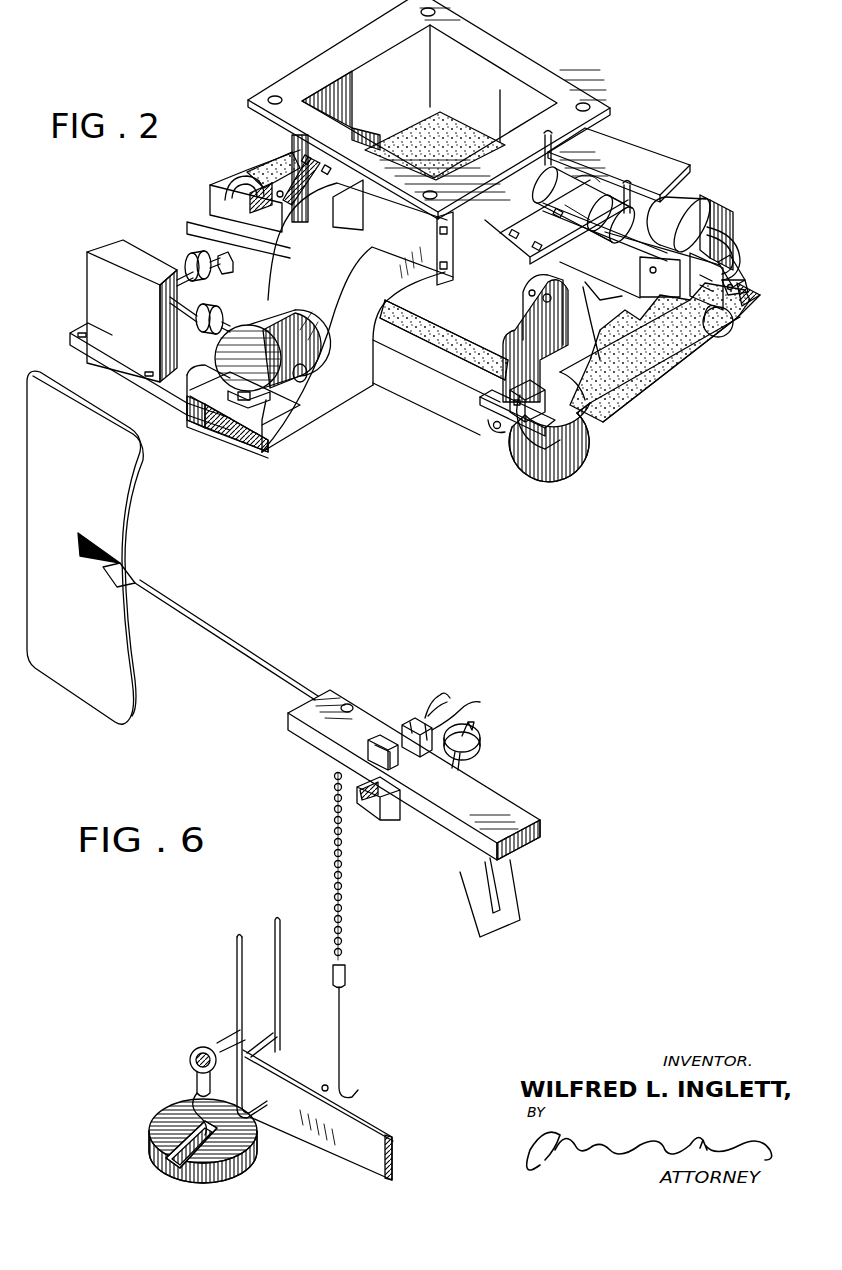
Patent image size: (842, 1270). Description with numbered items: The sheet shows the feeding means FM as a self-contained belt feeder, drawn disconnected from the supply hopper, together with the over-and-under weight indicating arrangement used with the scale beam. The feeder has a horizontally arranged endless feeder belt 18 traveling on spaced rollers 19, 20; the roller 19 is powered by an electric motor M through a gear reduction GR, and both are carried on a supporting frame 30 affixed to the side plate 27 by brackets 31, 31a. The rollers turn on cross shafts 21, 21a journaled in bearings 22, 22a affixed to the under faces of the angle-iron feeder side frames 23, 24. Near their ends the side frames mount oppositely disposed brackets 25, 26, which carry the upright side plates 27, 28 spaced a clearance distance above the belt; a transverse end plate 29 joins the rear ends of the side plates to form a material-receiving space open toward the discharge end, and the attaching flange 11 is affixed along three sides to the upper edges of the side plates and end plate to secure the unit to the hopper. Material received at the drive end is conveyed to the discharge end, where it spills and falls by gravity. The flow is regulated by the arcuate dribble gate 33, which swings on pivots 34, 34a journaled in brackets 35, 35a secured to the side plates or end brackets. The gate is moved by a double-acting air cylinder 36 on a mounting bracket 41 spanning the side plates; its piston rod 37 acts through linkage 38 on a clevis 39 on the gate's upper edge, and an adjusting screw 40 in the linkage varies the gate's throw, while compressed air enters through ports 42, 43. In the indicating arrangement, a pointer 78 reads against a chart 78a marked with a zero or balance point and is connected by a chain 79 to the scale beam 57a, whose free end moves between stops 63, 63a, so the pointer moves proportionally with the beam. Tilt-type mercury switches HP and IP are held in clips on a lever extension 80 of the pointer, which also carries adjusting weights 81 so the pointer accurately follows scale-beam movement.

In FIG. 2, the attaching flange 11 is at (507, 58).
In FIG. 2, the transverse end plate 29 is at (345, 90).
In FIG. 2, the bracket 25 is at (308, 187).
In FIG. 2, the roller 19 is at (238, 193).
In FIG. 2, the gear reduction GR is at (98, 293).
In FIG. 2, the bearing 22 is at (220, 250).
In FIG. 2, the cross shaft 21 is at (210, 273).
In FIG. 2, the electric motor M is at (238, 403).
In FIG. 2, the supporting frame 30 is at (207, 400).
In FIG. 2, the bracket 31 is at (309, 259).
In FIG. 2, the bracket 31a is at (344, 310).
In FIG. 2, the feeder side frame 23 is at (433, 360).
In FIG. 2, the upright side plate 27 is at (503, 284).
In FIG. 2, the bracket 35 is at (547, 340).
In FIG. 2, the bracket 26 is at (510, 353).
In FIG. 2, the bearing 22a is at (487, 413).
In FIG. 2, the cross shaft 21a is at (490, 430).
In FIG. 2, the roller 20 is at (553, 437).
In FIG. 2, the pivot 34 is at (650, 372).
In FIG. 2, the feeder belt 18 is at (633, 383).
In FIG. 2, the mounting bracket 41 is at (540, 227).
In FIG. 2, the upright side plate 28 is at (610, 163).
In FIG. 2, the feeding means FM is at (620, 139).
In FIG. 2, the port 42 is at (547, 143).
In FIG. 2, the port 43 is at (643, 180).
In FIG. 2, the double-acting air cylinder 36 is at (660, 220).
In FIG. 2, the dribble gate 33 is at (722, 232).
In FIG. 2, the bracket 35a is at (727, 267).
In FIG. 2, the pivot 34a is at (728, 282).
In FIG. 2, the feeder side frame 24 is at (757, 294).
In FIG. 2, the adjusting screw 40 is at (723, 327).
In FIG. 2, the piston rod 37 is at (657, 257).
In FIG. 2, the clevis 39 is at (667, 283).
In FIG. 2, the linkage 38 is at (683, 297).
In FIG. 6, the chart 78a is at (108, 508).
In FIG. 6, the pointer 78 is at (233, 643).
In FIG. 6, the lever extension 80 is at (480, 815).
In FIG. 6, the mercury switch HP is at (377, 737).
In FIG. 6, the mercury switch IP is at (413, 717).
In FIG. 6, the adjusting weights 81 is at (473, 742).
In FIG. 6, the chain 79 is at (343, 903).
In FIG. 6, the scale beam 57a is at (363, 1143).
In FIG. 6, the stop 63 is at (262, 1113).
In FIG. 6, the stop 63a is at (255, 1035).